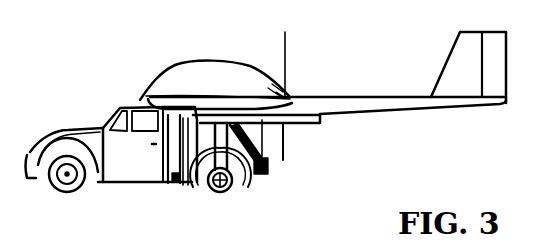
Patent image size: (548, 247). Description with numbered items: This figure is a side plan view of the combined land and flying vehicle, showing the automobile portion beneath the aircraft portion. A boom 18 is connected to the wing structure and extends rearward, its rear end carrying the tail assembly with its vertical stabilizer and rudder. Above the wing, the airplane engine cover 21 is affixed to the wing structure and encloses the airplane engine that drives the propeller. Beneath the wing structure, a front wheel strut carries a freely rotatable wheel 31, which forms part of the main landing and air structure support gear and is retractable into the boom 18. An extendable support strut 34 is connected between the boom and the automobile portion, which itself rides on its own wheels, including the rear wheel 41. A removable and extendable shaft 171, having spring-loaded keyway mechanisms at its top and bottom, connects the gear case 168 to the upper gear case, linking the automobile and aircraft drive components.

The boom 18 is at (358, 97).
The airplane engine cover 21 is at (203, 63).
The wheel 31 is at (230, 192).
The extendable support strut 34 is at (173, 184).
The rear wheel 41 is at (210, 193).
The gear case 168 is at (266, 166).
The removable and extendable shaft 171 is at (267, 142).